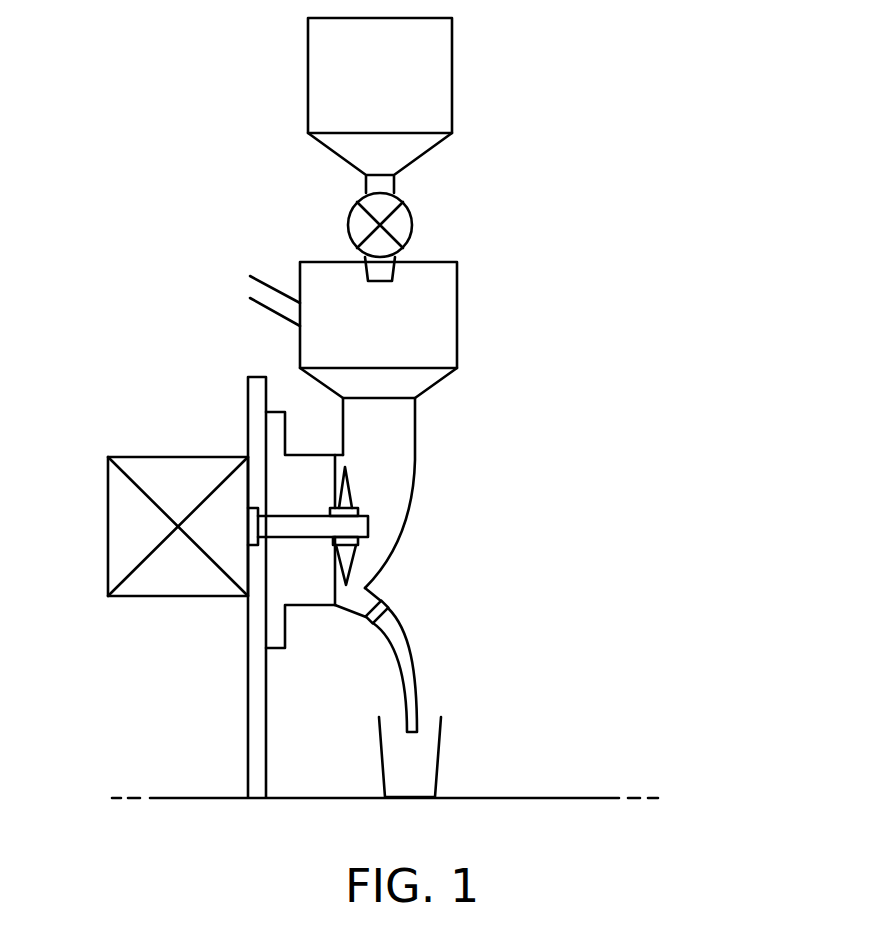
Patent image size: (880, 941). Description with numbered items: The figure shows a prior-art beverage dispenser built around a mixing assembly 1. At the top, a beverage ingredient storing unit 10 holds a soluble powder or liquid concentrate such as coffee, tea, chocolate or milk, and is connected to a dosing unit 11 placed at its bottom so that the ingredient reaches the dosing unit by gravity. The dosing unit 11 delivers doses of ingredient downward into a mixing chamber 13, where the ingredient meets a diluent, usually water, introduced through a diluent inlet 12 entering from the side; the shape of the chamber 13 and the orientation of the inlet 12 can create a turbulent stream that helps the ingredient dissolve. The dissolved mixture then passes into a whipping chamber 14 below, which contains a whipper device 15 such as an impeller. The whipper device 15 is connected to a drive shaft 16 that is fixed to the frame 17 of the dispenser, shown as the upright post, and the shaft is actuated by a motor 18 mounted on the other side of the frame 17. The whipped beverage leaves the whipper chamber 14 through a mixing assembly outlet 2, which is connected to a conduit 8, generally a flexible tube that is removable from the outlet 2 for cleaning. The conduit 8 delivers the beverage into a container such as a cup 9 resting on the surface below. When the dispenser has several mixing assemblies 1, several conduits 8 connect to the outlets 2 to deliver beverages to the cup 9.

The mixing assembly 1 is at (545, 305).
The mixing assembly outlet 2 is at (357, 622).
The conduit 8 is at (417, 672).
The cup 9 is at (438, 752).
The beverage ingredient storing unit 10 is at (435, 72).
The dosing unit 11 is at (402, 228).
The diluent inlet 12 is at (262, 306).
The mixing chamber 13 is at (457, 322).
The whipping chamber 14 is at (400, 552).
The whipper device 15 is at (352, 492).
The drive shaft 16 is at (285, 539).
The frame 17 is at (248, 400).
The motor 18 is at (118, 535).